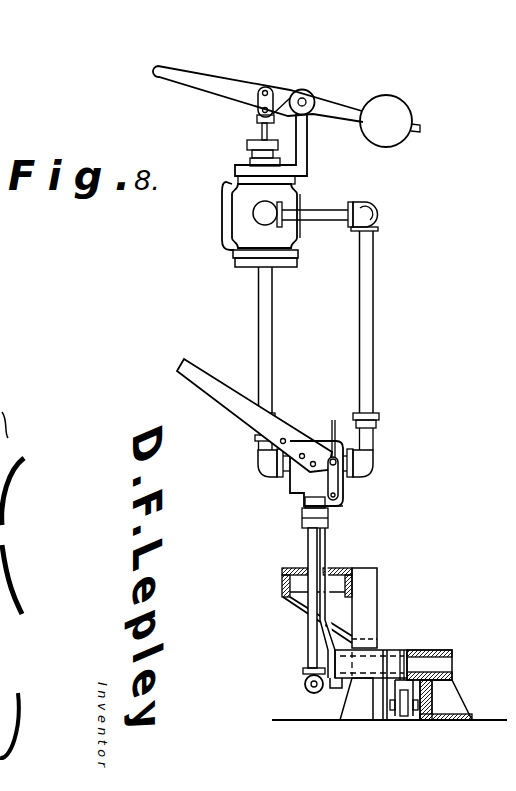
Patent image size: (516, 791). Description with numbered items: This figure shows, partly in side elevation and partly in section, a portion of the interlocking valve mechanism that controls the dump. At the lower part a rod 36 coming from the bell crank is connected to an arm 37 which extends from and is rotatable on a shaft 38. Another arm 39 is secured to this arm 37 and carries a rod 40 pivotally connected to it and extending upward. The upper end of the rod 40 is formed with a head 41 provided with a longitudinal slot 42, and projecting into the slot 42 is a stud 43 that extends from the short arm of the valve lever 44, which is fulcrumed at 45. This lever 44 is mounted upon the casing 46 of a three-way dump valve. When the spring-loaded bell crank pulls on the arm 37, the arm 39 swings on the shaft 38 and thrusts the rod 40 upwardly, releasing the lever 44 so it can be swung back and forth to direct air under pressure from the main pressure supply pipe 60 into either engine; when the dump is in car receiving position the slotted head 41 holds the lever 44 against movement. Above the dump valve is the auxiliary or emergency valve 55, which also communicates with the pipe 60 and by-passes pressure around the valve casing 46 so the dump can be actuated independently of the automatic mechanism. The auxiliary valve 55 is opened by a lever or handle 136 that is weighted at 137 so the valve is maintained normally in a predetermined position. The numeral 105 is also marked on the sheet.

The lever or handle 136 is at (208, 82).
The weight 137 is at (385, 112).
The auxiliary valve 55 is at (242, 202).
The pipe 105 is at (515, 168).
The valve lever 44 is at (228, 403).
The stud 43 is at (320, 428).
The longitudinal slot 42 is at (339, 482).
The head 41 is at (338, 507).
The fulcrum 45 is at (303, 470).
The casing 46 is at (300, 488).
The rod 40 is at (318, 556).
The main pressure supply pipe 60 is at (305, 688).
The arm 39 is at (338, 691).
The shaft 38 is at (453, 662).
The arm 37 is at (393, 717).
The rod 36 is at (403, 717).